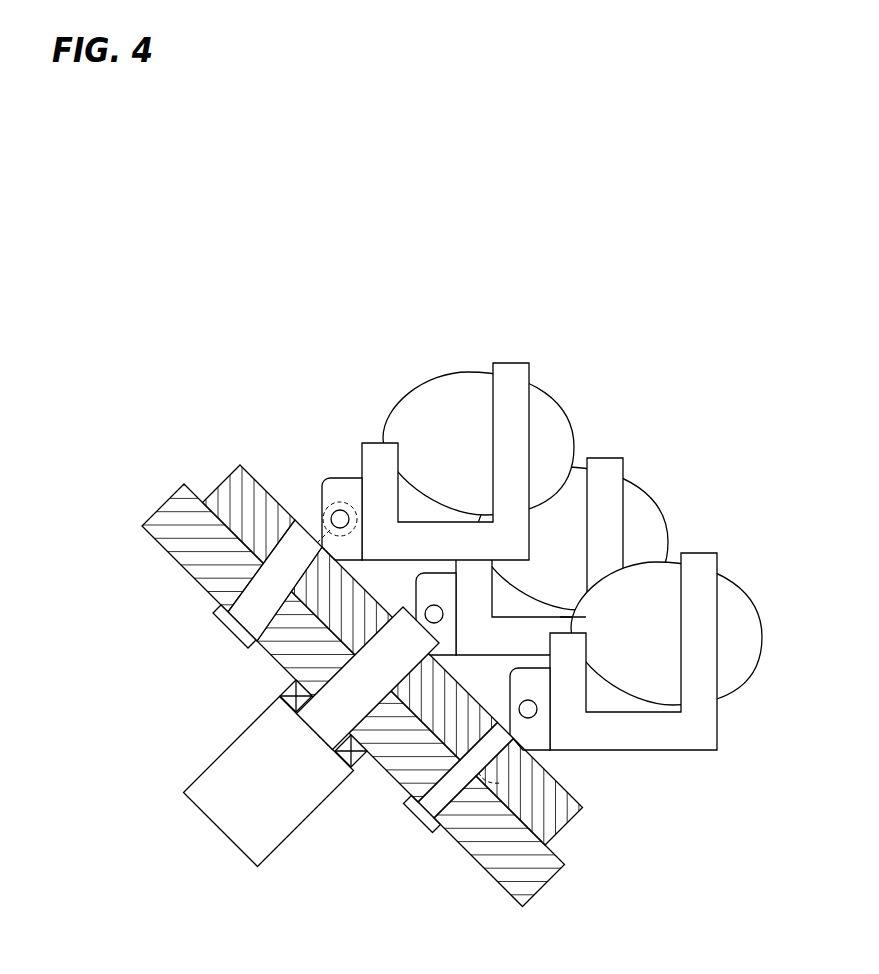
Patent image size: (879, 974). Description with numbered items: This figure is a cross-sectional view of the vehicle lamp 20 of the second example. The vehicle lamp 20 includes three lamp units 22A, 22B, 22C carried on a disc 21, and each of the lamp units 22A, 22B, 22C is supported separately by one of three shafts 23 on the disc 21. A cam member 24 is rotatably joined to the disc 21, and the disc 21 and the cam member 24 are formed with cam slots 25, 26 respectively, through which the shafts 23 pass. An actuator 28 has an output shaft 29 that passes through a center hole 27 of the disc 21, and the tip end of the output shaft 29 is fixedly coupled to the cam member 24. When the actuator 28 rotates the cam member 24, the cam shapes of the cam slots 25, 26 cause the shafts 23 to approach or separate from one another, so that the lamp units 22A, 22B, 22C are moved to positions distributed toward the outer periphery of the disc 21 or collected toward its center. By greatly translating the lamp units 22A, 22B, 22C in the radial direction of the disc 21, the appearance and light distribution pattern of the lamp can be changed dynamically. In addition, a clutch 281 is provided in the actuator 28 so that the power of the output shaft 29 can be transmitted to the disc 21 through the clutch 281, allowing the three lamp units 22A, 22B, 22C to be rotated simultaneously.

The vehicle lamp 20 is at (310, 366).
The disc 21 is at (162, 500).
The lamp unit 22A is at (545, 368).
The lamp unit 22B is at (638, 458).
The lamp unit 22C is at (730, 553).
The shaft 23 is at (222, 628).
The cam member 24 is at (222, 480).
The cam slot 25 is at (463, 806).
The cam slot 26 is at (520, 768).
The center hole 27 is at (298, 672).
The actuator 28 is at (220, 818).
The clutch 281 is at (282, 700).
The output shaft 29 is at (323, 732).